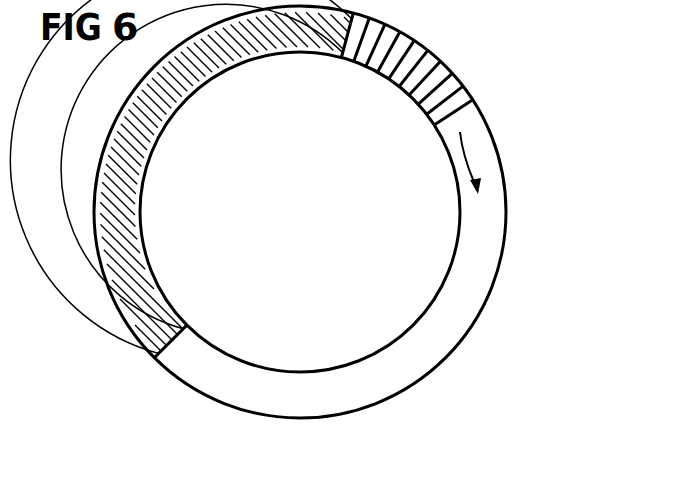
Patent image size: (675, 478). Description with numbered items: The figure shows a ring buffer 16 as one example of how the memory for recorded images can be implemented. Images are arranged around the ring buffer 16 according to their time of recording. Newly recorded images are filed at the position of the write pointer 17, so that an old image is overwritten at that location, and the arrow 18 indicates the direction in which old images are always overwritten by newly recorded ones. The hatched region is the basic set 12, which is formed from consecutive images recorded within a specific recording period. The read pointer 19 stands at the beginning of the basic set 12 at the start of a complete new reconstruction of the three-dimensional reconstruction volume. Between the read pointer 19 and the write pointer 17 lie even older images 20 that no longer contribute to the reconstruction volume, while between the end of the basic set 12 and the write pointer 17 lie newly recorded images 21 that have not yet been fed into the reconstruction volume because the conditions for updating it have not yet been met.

The basic set 12 is at (148, 115).
The ring buffer 16 is at (524, 293).
The write pointer 17 is at (486, 96).
The arrow 18 is at (470, 158).
The read pointer 19 is at (142, 367).
The older images 20 is at (432, 348).
The newly recorded images 21 is at (410, 83).